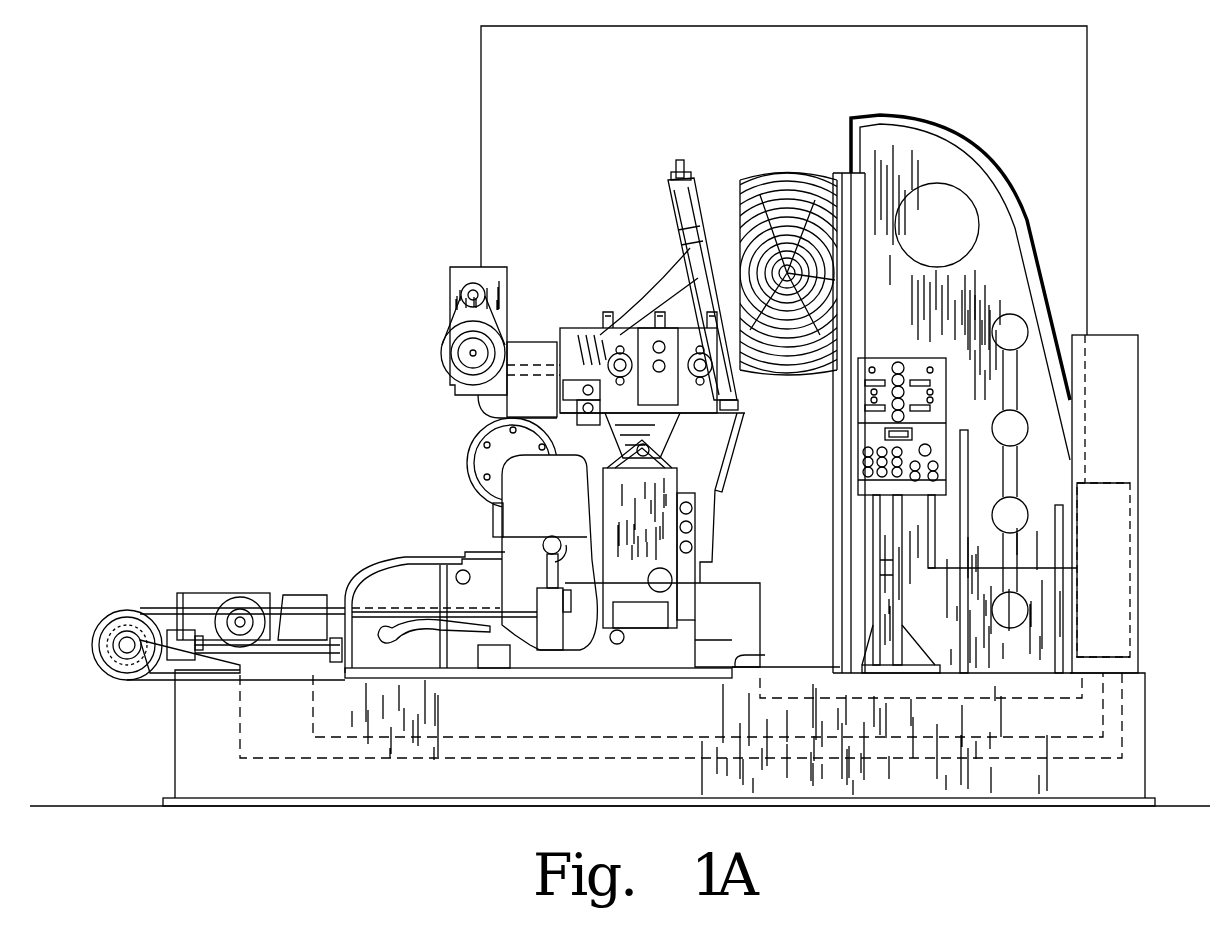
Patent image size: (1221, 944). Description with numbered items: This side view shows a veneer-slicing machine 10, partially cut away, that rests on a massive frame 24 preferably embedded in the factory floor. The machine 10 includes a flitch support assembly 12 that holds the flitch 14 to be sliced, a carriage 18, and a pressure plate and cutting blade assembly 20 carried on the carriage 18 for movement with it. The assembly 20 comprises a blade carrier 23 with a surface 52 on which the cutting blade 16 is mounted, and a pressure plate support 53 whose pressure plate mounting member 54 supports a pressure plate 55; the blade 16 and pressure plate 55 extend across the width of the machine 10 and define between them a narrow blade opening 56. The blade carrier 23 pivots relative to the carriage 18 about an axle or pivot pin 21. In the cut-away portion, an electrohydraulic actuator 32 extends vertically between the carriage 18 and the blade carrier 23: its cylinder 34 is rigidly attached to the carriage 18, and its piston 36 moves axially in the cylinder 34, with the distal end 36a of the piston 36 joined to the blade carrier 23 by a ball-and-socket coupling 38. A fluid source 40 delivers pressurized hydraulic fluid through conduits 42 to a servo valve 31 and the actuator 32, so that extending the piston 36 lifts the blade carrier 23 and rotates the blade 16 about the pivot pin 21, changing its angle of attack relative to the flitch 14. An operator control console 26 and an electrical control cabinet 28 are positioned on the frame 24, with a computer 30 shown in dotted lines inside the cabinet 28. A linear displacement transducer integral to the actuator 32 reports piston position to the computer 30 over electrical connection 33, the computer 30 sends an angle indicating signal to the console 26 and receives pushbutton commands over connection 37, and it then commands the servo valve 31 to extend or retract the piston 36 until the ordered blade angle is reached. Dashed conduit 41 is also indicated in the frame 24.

The veneer-slicing machine 10 is at (428, 240).
The flitch support assembly 12 is at (820, 107).
The flitch 14 is at (775, 190).
The cutting blade 16 is at (740, 440).
The carriage 18 is at (395, 550).
The pressure plate and cutting blade assembly 20 is at (565, 225).
The axle or pivot pin 21 is at (672, 580).
The blade carrier 23 is at (505, 517).
The frame 24 is at (195, 740).
The control console 26 is at (912, 360).
The electrical control cabinet 28 is at (1107, 332).
The computer 30 is at (1138, 620).
The servo valve 31 is at (598, 580).
The electrohydraulic actuator 32 is at (570, 607).
The electrical connection 33 is at (762, 610).
The cylinder 34 is at (545, 650).
The piston 36 is at (558, 540).
The distal end of piston 36a is at (550, 540).
The connection 37 is at (1000, 568).
The ball-and-socket coupling 38 is at (495, 527).
The fluid source 40 is at (305, 597).
The conduit 41 is at (540, 737).
The conduits 42 is at (336, 596).
The surface 52 is at (726, 492).
The pressure plate support 53 is at (655, 275).
The pressure plate mounting member 54 is at (700, 405).
The pressure plate 55 is at (745, 405).
The blade opening 56 is at (742, 415).